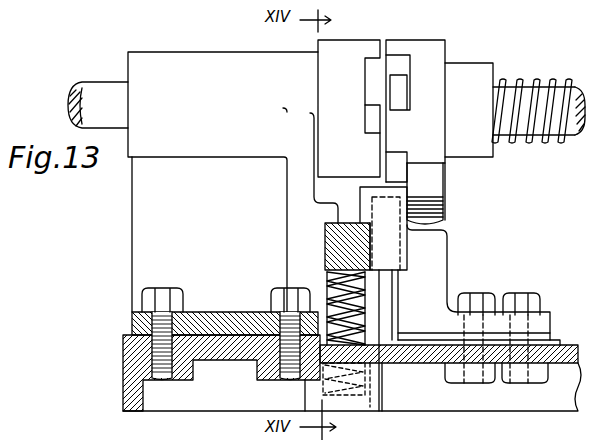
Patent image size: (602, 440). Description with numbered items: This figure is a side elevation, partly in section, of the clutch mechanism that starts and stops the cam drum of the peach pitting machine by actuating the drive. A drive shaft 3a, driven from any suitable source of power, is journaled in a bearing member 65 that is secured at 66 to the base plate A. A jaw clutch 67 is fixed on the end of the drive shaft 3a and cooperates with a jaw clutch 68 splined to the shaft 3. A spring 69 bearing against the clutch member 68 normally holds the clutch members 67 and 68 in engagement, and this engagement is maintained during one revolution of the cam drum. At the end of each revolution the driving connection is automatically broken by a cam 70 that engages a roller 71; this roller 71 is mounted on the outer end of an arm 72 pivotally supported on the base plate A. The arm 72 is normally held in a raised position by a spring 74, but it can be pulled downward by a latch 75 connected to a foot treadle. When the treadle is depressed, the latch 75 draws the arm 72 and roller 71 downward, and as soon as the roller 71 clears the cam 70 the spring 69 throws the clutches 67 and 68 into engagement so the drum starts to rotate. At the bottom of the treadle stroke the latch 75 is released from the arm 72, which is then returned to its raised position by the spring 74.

The shaft 3 is at (578, 94).
The drive shaft 3a is at (99, 86).
The bearing member 65 is at (226, 62).
The securing means 66 is at (268, 294).
The jaw clutch 67 is at (345, 48).
The jaw clutch 68 is at (428, 52).
The spring 69 is at (534, 82).
The cam 70 is at (436, 185).
The roller 71 is at (445, 221).
The arm 72 is at (390, 243).
The spring 74 is at (326, 280).
The latch 75 is at (381, 278).
The base plate A is at (125, 377).